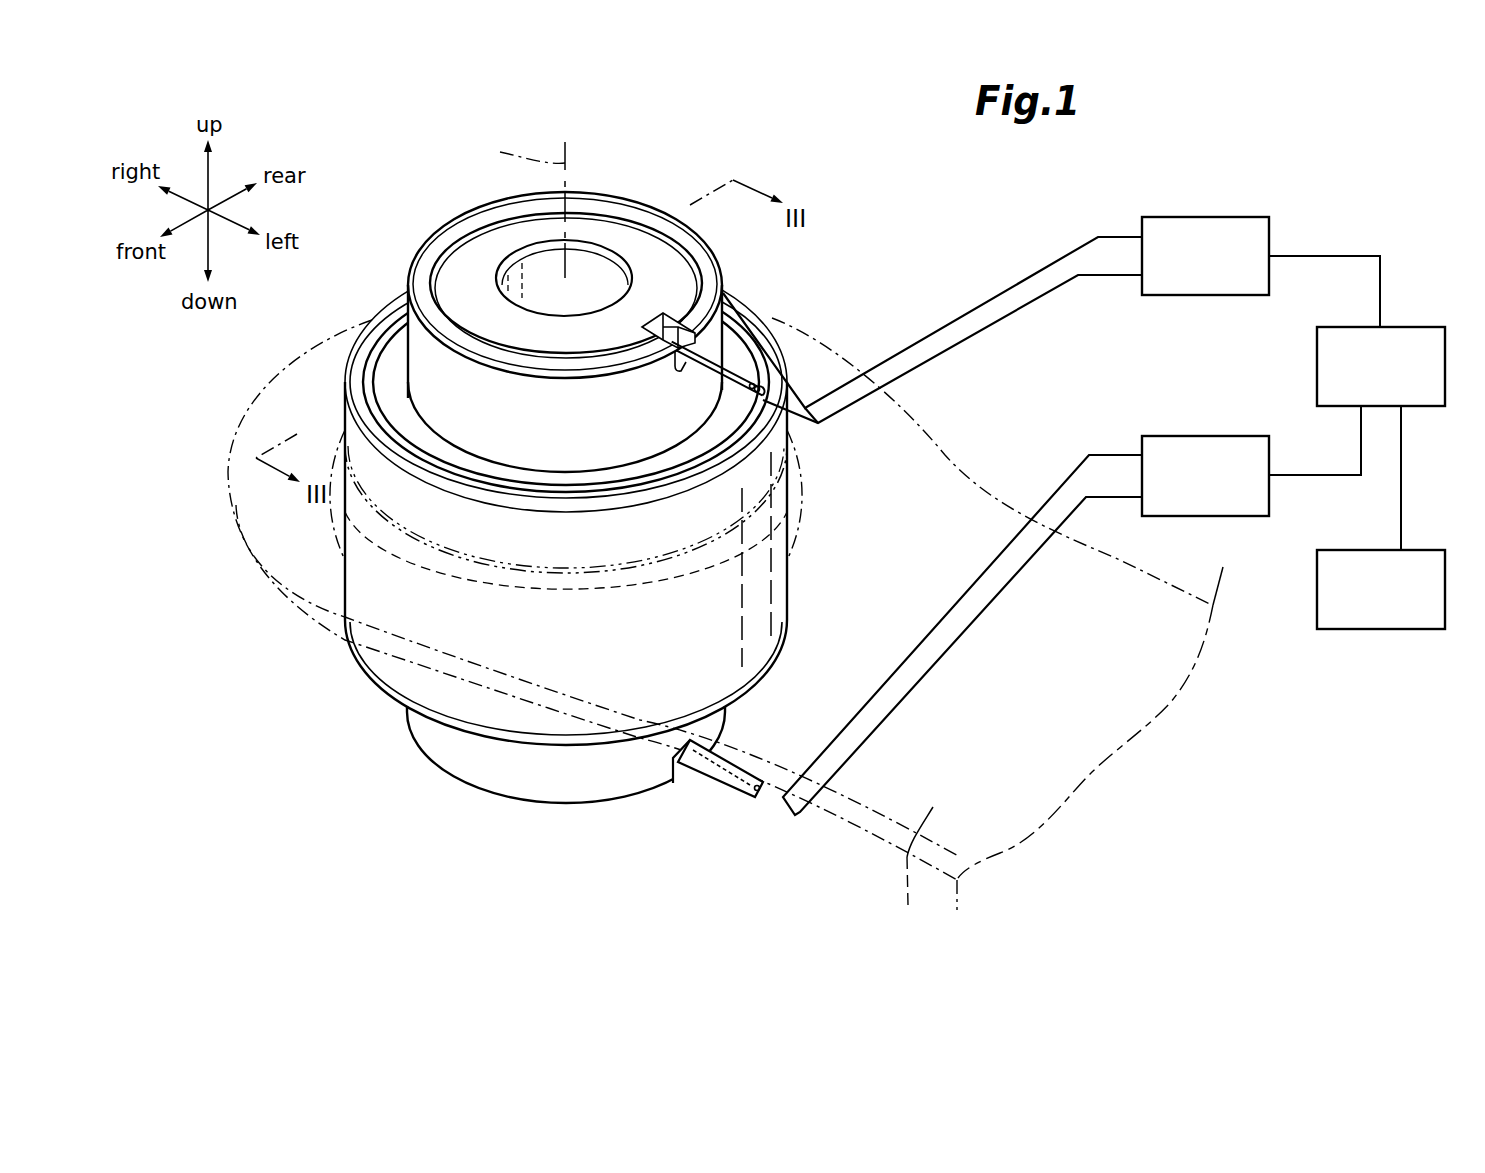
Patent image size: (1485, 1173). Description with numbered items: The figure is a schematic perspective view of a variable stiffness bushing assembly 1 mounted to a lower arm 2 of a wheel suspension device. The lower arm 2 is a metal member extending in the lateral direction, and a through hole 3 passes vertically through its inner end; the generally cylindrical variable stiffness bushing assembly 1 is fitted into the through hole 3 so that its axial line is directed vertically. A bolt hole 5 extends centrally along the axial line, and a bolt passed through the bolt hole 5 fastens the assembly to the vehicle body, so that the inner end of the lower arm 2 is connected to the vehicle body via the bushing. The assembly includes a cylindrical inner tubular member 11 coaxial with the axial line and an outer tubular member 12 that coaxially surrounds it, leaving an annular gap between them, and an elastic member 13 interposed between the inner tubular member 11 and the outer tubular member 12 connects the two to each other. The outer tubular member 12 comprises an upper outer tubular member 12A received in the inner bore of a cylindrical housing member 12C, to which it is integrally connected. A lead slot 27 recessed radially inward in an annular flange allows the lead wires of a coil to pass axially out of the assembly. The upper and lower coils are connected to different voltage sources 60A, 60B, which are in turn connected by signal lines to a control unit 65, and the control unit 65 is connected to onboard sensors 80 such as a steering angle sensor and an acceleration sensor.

The variable stiffness bushing assembly 1 is at (488, 505).
The lower arm 2 is at (906, 907).
The through hole 3 is at (463, 540).
The bolt hole 5 is at (617, 274).
The inner tubular member 11 is at (577, 300).
The outer tubular member 12 is at (488, 498).
The upper outer tubular member 12A is at (383, 351).
The housing member 12C is at (352, 437).
The elastic member 13 is at (395, 353).
The lead slot 27 is at (724, 295).
The voltage source 60A is at (1192, 216).
The voltage source 60B is at (1192, 436).
The control unit 65 is at (1418, 327).
The onboard sensors 80 is at (1359, 629).